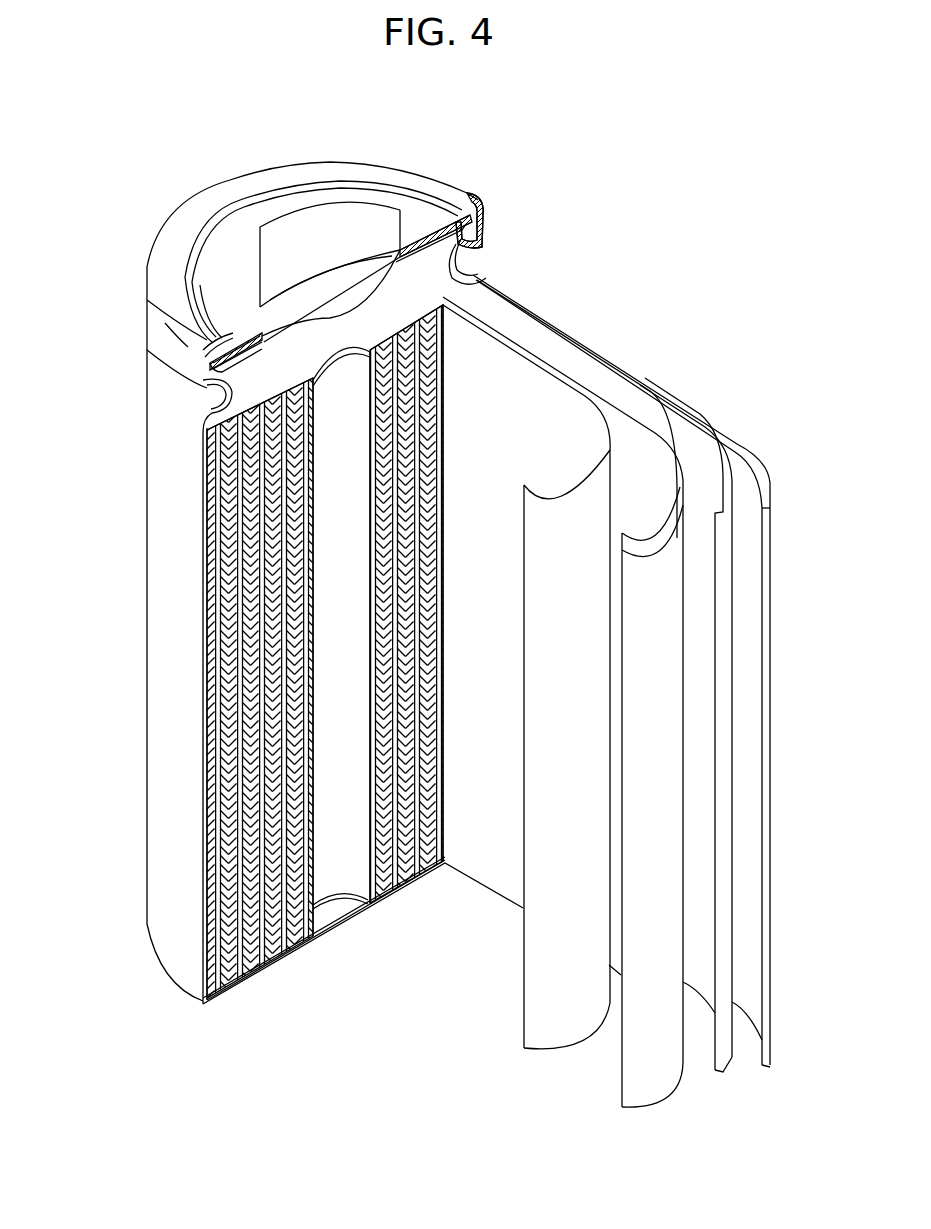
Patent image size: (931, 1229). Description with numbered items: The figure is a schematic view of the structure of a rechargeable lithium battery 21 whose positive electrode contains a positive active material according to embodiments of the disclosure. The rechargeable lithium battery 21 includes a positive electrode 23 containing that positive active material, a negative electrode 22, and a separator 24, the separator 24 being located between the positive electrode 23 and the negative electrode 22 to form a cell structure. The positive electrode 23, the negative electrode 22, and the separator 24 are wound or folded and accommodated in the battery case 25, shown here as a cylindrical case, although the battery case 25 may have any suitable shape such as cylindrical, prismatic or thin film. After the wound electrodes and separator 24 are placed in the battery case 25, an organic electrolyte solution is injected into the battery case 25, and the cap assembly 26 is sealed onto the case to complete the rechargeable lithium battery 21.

The rechargeable lithium battery 21 is at (476, 162).
The negative electrode 22 is at (733, 443).
The positive electrode 23 is at (622, 412).
The separator 24 is at (498, 352).
The battery case 25 is at (152, 632).
The cap assembly 26 is at (295, 213).